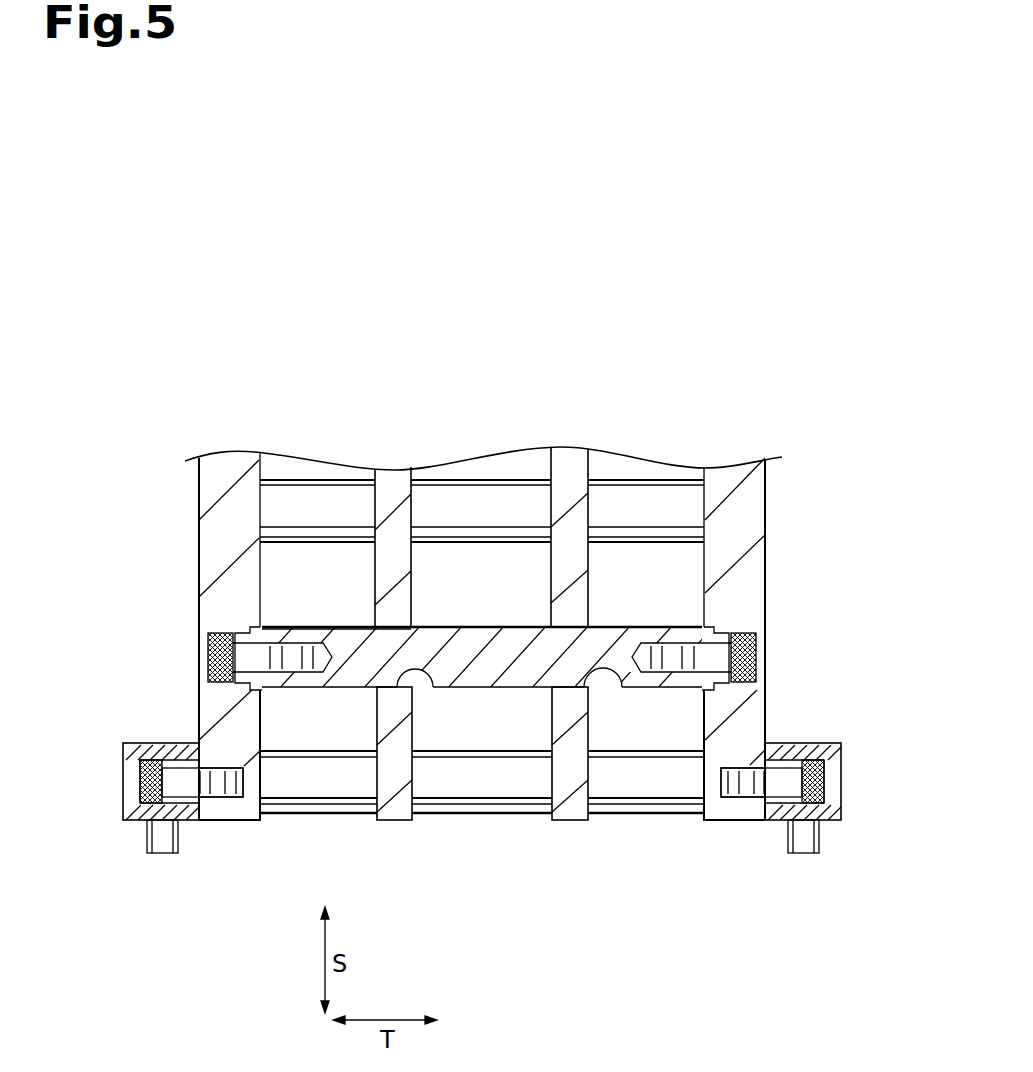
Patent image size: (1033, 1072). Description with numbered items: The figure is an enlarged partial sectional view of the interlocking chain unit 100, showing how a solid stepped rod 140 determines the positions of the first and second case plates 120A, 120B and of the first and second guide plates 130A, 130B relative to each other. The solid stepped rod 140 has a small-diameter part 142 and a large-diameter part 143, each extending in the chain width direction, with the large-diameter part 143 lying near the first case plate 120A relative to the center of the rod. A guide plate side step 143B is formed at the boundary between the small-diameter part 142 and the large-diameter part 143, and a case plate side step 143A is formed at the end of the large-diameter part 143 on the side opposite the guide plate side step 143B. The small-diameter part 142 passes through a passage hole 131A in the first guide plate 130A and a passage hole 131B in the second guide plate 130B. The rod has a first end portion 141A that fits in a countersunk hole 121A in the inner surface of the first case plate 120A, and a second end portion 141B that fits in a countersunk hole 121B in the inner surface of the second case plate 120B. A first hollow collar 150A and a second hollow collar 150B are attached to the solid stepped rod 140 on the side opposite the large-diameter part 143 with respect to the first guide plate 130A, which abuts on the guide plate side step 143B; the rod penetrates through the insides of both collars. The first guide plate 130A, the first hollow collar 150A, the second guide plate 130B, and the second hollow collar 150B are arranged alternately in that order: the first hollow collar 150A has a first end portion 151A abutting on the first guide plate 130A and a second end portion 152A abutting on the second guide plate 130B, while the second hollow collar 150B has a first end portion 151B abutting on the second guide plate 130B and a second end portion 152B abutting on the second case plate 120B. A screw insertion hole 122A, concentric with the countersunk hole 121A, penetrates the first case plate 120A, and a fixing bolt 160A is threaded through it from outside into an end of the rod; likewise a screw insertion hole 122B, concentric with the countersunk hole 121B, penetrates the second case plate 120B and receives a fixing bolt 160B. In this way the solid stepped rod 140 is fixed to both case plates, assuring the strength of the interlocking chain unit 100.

The interlocking chain unit 100 is at (268, 357).
The first case plate 120A is at (217, 549).
The second case plate 120B is at (740, 578).
The countersunk hole 121A is at (273, 700).
The countersunk hole 121B is at (702, 700).
The screw insertion hole 122A is at (247, 662).
The screw insertion hole 122B is at (725, 660).
The first end portion 141A is at (253, 630).
The second end portion 141B is at (722, 637).
The fixing bolt 160A is at (215, 655).
The fixing bolt 160B is at (755, 652).
The small-diameter part 142 is at (468, 647).
The large-diameter part 143 is at (318, 637).
The case plate side step 143A is at (267, 627).
The guide plate side step 143B is at (370, 627).
The first end portion 151A is at (417, 627).
The second end portion 152A is at (548, 627).
The first end portion 151B is at (592, 627).
The second end portion 152B is at (702, 627).
The solid stepped rod 140 is at (310, 694).
The first guide plate 130A is at (397, 775).
The second guide plate 130B is at (572, 775).
The passage hole 131A is at (431, 690).
The passage hole 131B is at (613, 690).
The first hollow collar 150A is at (497, 690).
The second hollow collar 150B is at (673, 690).